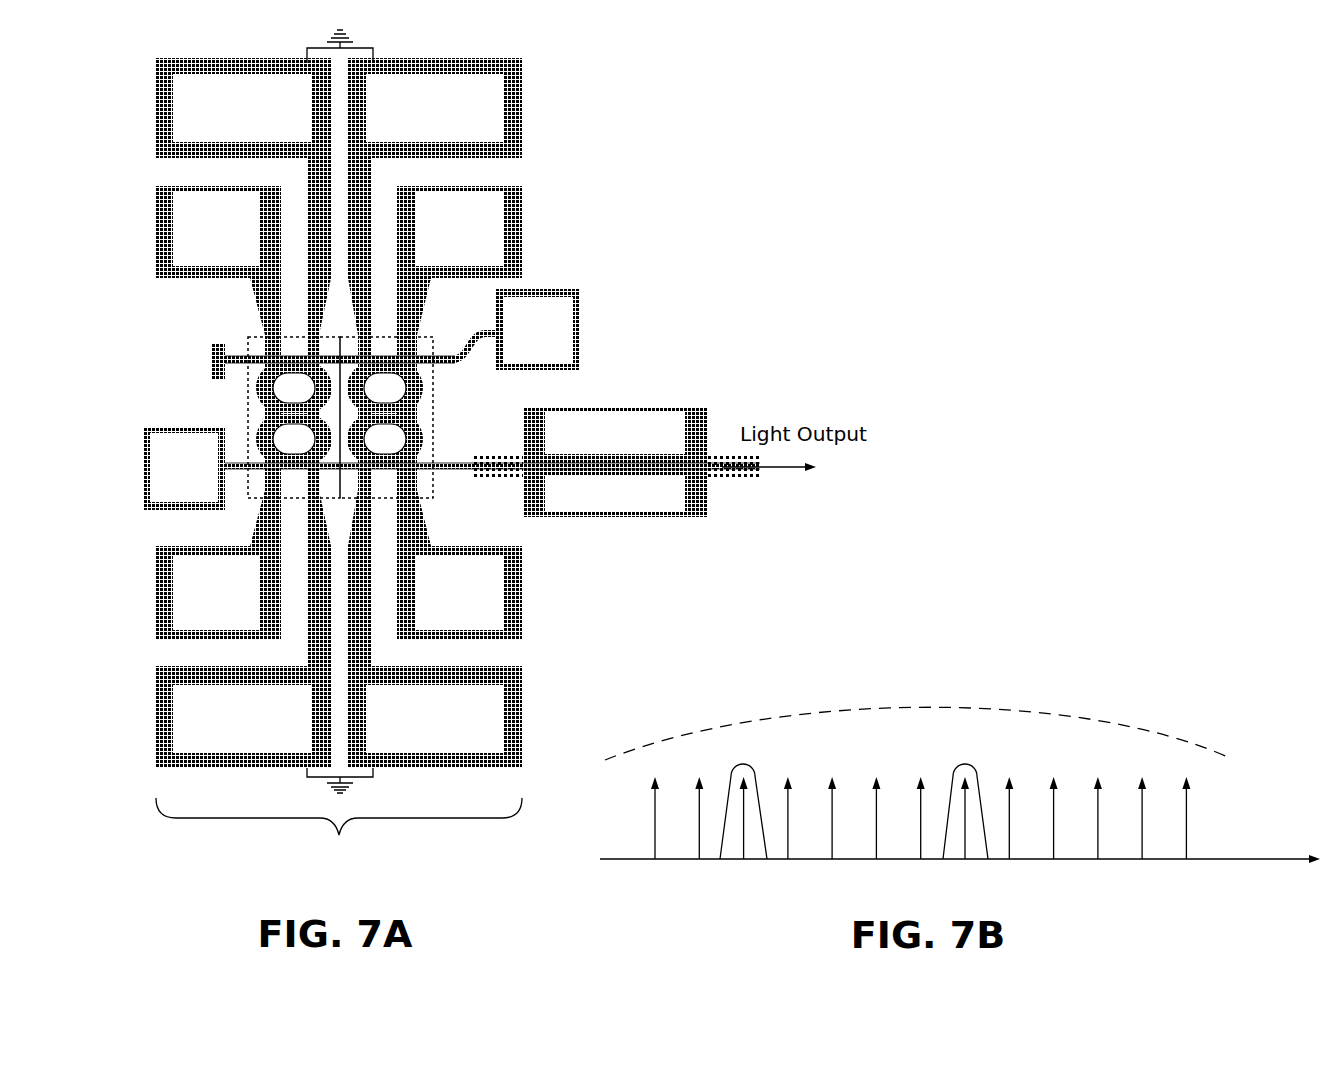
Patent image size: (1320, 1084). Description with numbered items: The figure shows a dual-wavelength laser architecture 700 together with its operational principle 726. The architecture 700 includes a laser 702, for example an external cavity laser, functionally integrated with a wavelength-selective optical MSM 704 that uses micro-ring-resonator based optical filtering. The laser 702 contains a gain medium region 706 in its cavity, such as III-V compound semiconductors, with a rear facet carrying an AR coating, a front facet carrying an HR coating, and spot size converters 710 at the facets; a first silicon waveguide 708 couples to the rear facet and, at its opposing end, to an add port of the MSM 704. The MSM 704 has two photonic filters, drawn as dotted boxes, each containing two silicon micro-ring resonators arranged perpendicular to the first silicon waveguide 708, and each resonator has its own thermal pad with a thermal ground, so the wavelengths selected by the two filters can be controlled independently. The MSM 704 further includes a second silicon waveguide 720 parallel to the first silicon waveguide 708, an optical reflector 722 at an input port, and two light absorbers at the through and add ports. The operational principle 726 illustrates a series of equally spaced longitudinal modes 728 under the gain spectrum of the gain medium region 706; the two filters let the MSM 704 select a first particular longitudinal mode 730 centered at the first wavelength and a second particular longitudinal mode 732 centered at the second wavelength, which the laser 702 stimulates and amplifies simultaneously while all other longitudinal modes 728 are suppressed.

In FIG. 7A, the DW laser architecture 700 is at (1070, 216).
In FIG. 7A, the laser 702 is at (700, 387).
In FIG. 7A, the wavelength-selective optical MSM 704 is at (339, 845).
In FIG. 7A, the gain medium region 706 is at (615, 462).
In FIG. 7B, the gain medium region 706 is at (934, 716).
In FIG. 7A, the first silicon waveguide 708 is at (460, 470).
In FIG. 7A, the SSC 710 is at (494, 482).
In FIG. 7A, the second silicon waveguide 720 is at (464, 356).
In FIG. 7A, the optical reflector 722 is at (212, 366).
In FIG. 7B, the operational principle 726 is at (1064, 588).
In FIG. 7B, the longitudinal modes 728 is at (1222, 823).
In FIG. 7B, the first particular longitudinal mode 730 is at (787, 747).
In FIG. 7B, the second particular longitudinal mode 732 is at (1007, 748).